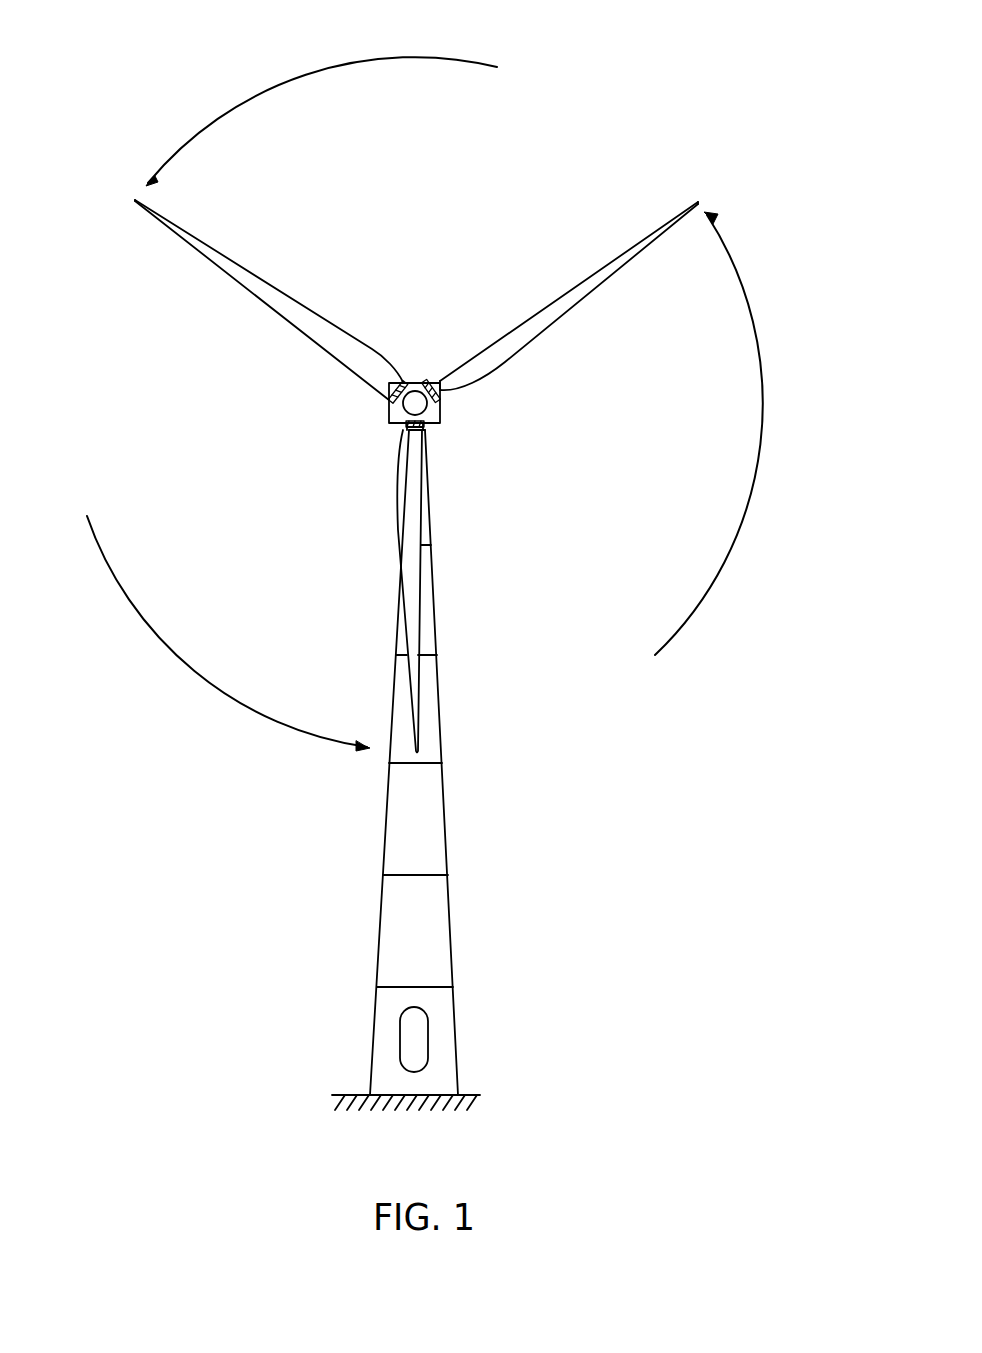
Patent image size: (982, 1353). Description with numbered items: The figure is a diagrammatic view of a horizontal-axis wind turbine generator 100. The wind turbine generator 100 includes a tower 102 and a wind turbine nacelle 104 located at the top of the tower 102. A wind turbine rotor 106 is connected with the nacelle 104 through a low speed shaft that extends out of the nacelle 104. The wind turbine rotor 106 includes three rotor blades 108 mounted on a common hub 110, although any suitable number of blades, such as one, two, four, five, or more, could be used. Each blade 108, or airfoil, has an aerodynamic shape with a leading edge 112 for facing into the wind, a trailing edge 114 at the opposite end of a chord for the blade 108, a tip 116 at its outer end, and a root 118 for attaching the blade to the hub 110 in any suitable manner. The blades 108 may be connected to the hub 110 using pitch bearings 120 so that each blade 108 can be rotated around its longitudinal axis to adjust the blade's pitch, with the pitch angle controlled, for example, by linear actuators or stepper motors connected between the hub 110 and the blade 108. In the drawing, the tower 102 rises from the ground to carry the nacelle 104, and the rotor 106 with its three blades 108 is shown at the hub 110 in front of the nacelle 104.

The wind turbine generator 100 is at (365, 938).
The tower 102 is at (438, 830).
The wind turbine nacelle 104 is at (442, 425).
The wind turbine rotor 106 is at (362, 399).
The rotor blade 108 is at (262, 289).
The hub 110 is at (415, 398).
The leading edge 112 is at (590, 272).
The trailing edge 114 is at (583, 300).
The tip 116 is at (704, 195).
The root 118 is at (450, 400).
The pitch bearing 120 is at (437, 386).